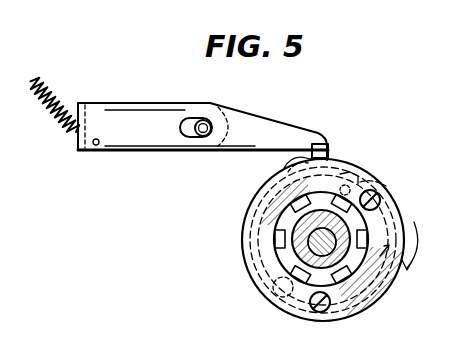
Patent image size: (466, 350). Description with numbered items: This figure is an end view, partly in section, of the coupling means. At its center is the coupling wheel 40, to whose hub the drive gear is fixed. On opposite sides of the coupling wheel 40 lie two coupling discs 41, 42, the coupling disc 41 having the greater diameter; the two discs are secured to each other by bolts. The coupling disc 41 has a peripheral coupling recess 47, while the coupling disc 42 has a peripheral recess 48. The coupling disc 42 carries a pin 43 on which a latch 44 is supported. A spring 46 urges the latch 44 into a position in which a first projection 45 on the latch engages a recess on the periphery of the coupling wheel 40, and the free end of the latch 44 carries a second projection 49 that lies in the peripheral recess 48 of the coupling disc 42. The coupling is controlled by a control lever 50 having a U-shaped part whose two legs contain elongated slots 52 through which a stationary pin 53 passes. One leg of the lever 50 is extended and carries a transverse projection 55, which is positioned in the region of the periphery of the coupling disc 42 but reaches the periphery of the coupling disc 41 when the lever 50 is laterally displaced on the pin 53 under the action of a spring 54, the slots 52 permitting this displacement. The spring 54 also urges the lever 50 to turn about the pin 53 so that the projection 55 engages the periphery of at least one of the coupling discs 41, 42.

The coupling wheel 40 is at (388, 282).
The coupling disc 41 is at (252, 203).
The coupling disc 42 is at (287, 315).
The pin 43 is at (268, 303).
The latch 44 is at (258, 258).
The first projection 45 is at (279, 245).
The spring 46 is at (386, 208).
The peripheral coupling recess 47 is at (284, 164).
The peripheral recess 48 is at (384, 176).
The second projection 49 is at (349, 170).
The control lever 50 is at (246, 123).
The elongated slots 52 is at (188, 137).
The stationary pin 53 is at (203, 138).
The spring 54 is at (72, 132).
The transverse projection 55 is at (328, 146).